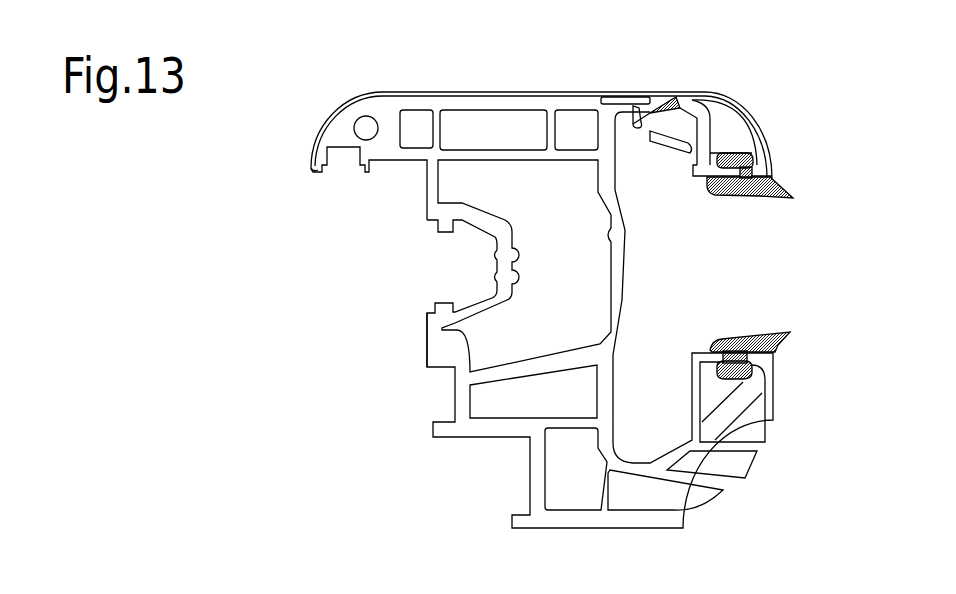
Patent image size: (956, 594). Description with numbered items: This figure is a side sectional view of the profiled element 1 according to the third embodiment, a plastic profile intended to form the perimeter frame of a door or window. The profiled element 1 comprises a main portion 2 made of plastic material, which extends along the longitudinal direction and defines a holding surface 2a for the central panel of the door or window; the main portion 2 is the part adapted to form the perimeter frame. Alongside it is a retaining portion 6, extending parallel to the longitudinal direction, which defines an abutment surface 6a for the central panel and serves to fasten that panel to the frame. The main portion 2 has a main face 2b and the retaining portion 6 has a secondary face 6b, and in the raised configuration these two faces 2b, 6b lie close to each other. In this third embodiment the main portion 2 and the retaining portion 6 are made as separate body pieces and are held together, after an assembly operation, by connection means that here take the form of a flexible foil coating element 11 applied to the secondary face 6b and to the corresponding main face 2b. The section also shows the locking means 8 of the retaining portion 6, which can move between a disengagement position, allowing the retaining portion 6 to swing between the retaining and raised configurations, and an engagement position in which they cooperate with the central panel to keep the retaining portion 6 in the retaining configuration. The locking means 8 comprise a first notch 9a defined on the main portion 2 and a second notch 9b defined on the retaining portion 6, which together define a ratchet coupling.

The profiled element 1 is at (289, 435).
The main portion 2 is at (424, 355).
The holding surface 2a is at (700, 352).
The main face 2b is at (313, 172).
The retaining portion 6 is at (662, 152).
The abutment surface 6a is at (703, 182).
The secondary face 6b is at (772, 178).
The locking means 8 is at (680, 100).
The first notch 9a is at (652, 100).
The second notch 9b is at (637, 140).
The flexible foil coating element 11 is at (378, 92).